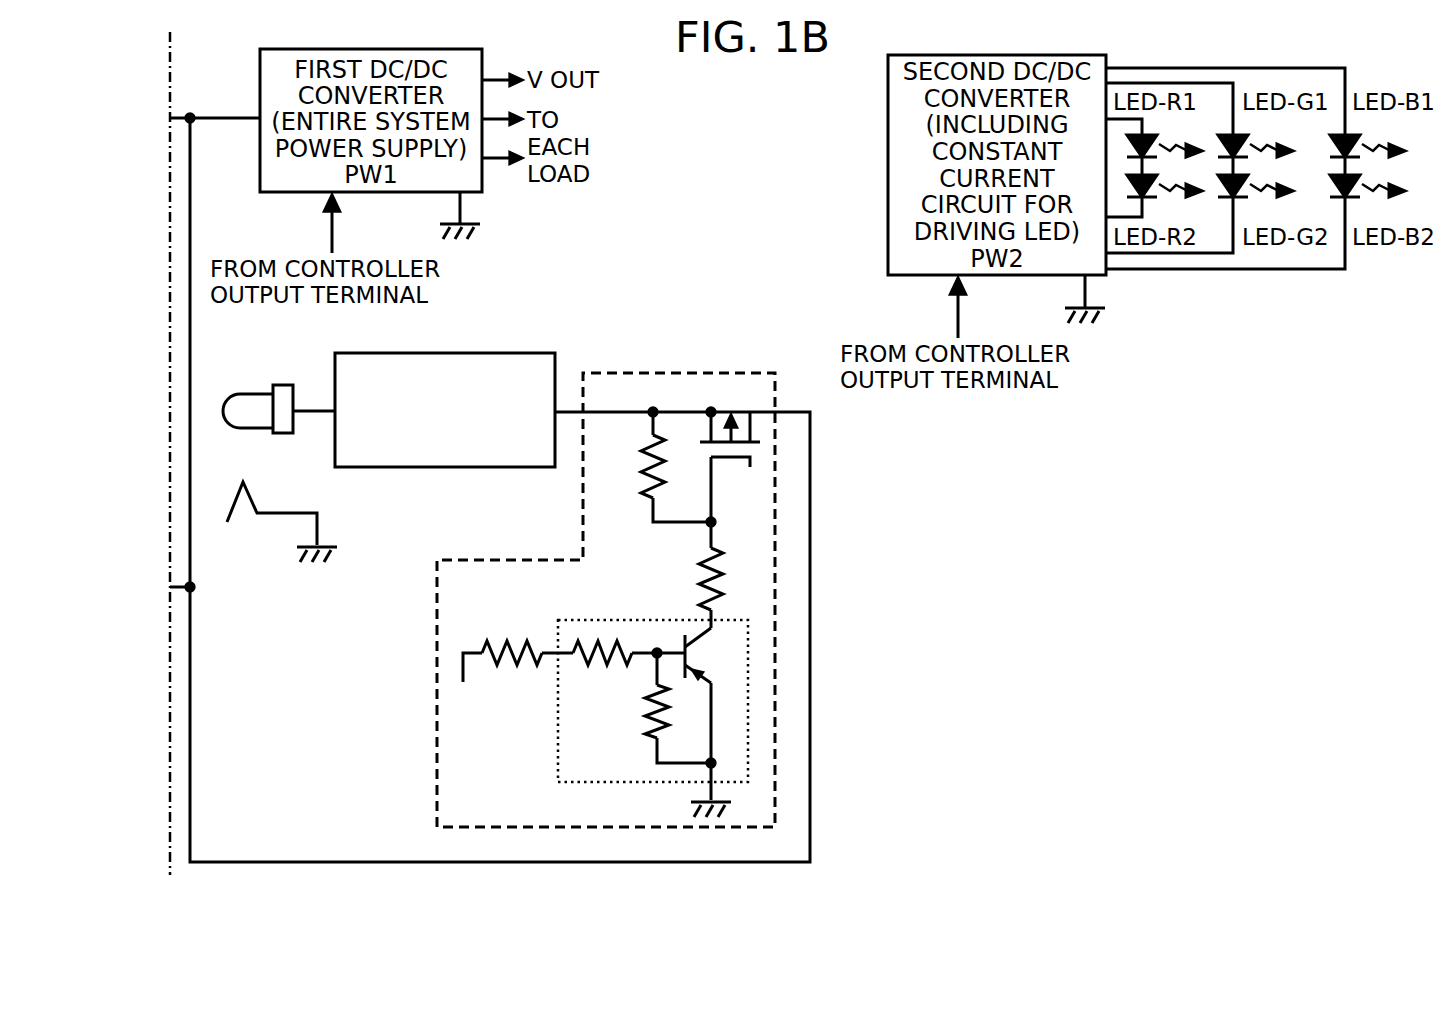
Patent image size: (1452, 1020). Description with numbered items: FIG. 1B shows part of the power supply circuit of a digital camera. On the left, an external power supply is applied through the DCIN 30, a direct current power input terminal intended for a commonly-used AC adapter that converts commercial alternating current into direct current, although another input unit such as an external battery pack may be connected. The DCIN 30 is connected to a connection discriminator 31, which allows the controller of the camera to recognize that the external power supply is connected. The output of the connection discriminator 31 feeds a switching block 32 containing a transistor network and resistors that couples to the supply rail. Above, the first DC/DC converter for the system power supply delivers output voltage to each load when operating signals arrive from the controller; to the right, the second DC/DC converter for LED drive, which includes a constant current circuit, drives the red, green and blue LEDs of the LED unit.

The DCIN 30 is at (272, 490).
The connection discriminator 31 is at (520, 467).
The switching circuit block 32 is at (437, 582).